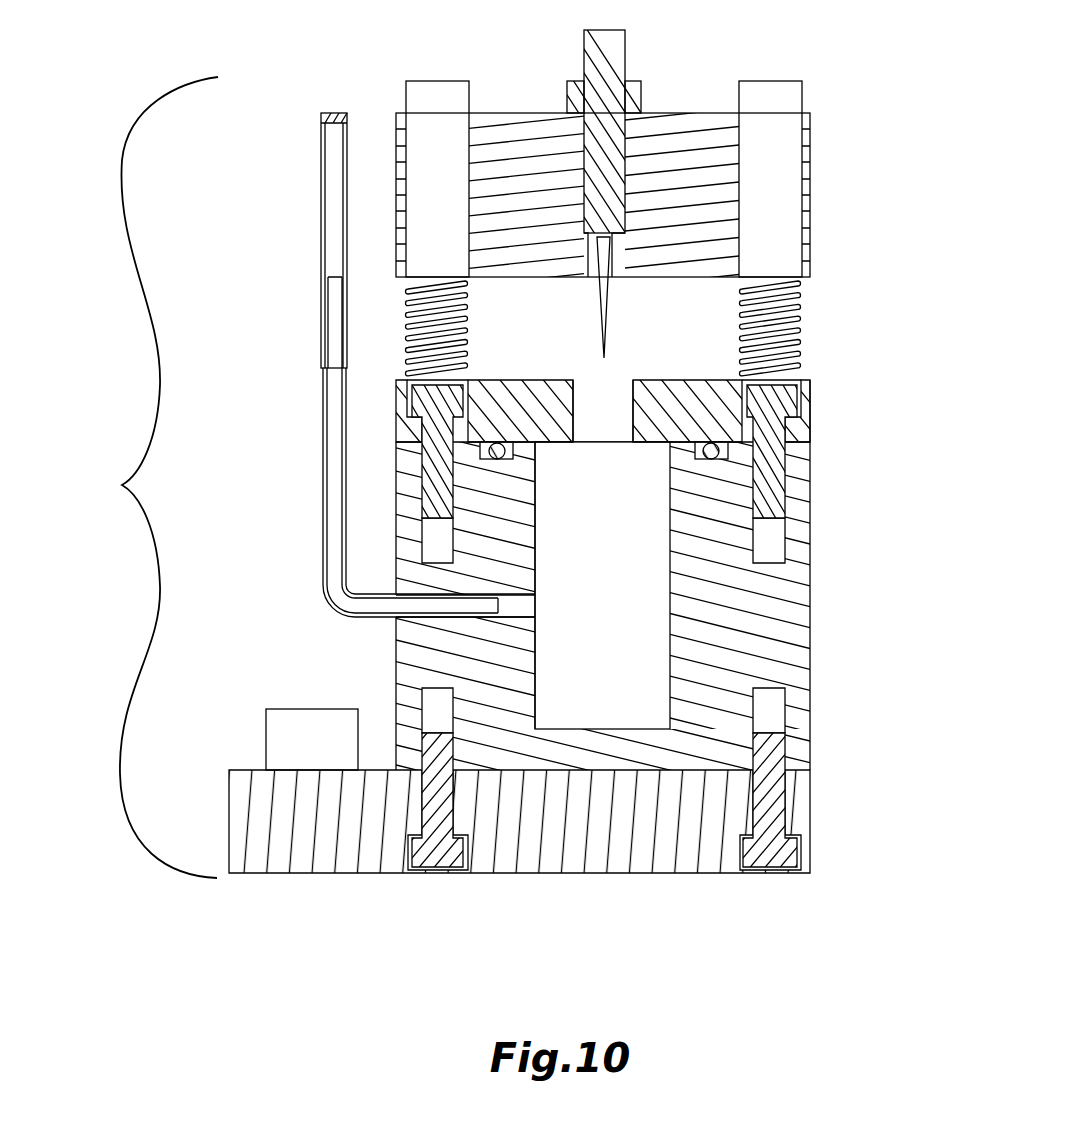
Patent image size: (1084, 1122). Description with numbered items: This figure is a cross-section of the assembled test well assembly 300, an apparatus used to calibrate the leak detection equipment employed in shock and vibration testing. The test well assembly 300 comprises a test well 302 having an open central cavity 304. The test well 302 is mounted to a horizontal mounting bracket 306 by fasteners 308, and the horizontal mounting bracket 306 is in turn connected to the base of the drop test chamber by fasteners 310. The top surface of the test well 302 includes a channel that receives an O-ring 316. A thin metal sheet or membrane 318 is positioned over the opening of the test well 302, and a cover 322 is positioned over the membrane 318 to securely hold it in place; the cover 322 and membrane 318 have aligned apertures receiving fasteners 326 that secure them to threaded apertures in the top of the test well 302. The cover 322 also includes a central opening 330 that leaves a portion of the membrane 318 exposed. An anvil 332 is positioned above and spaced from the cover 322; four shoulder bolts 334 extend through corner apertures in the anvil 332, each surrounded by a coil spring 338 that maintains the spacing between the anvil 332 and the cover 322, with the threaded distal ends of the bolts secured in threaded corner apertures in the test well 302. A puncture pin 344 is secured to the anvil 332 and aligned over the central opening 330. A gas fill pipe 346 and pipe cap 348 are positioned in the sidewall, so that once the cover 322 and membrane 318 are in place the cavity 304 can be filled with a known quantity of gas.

The test well assembly 300 is at (146, 477).
The test well 302 is at (802, 602).
The open central cavity 304 is at (610, 662).
The horizontal mounting bracket 306 is at (809, 808).
The fasteners 308 is at (432, 852).
The fasteners 310 is at (278, 735).
The O-ring 316 is at (713, 458).
The membrane 318 is at (560, 442).
The cover 322 is at (670, 395).
The fasteners 326 is at (430, 403).
The central opening 330 is at (595, 423).
The anvil 332 is at (815, 201).
The shoulder bolts 334 is at (432, 90).
The coil spring 338 is at (463, 310).
The puncture pin 344 is at (600, 75).
The gas fill pipe 346 is at (323, 418).
The pipe cap 348 is at (322, 220).